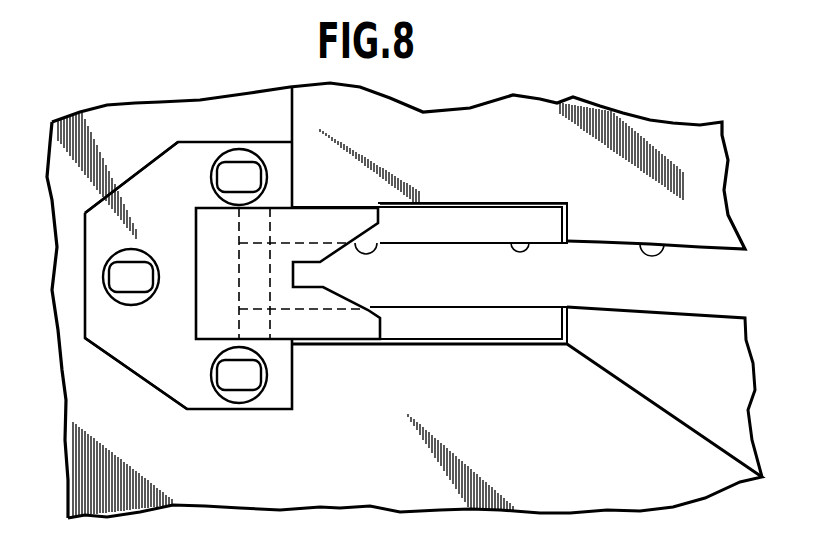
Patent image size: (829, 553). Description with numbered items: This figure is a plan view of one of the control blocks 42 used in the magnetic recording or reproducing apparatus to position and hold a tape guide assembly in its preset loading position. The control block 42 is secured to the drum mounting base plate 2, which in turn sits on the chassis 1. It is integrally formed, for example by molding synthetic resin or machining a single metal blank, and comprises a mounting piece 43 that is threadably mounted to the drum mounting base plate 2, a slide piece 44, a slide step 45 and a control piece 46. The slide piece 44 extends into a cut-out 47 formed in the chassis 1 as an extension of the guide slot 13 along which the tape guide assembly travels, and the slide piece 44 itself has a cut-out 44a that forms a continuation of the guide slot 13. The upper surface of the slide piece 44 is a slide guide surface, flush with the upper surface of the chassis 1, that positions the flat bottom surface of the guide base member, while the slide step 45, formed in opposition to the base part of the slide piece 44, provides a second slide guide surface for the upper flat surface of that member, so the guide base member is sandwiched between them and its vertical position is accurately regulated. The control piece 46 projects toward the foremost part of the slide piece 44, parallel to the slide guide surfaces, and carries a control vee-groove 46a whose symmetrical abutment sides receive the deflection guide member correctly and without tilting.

The chassis 1 is at (657, 133).
The drum mounting base plate 2 is at (655, 480).
The guide slot 13 is at (667, 243).
The control block 42 is at (280, 397).
The mounting piece 43 is at (178, 380).
The slide piece 44 is at (453, 213).
The cut-out 44a is at (533, 240).
The slide step 45 is at (263, 300).
The control piece 46 is at (320, 223).
The control vee-groove 46a is at (377, 237).
The cut-out 47 is at (523, 205).